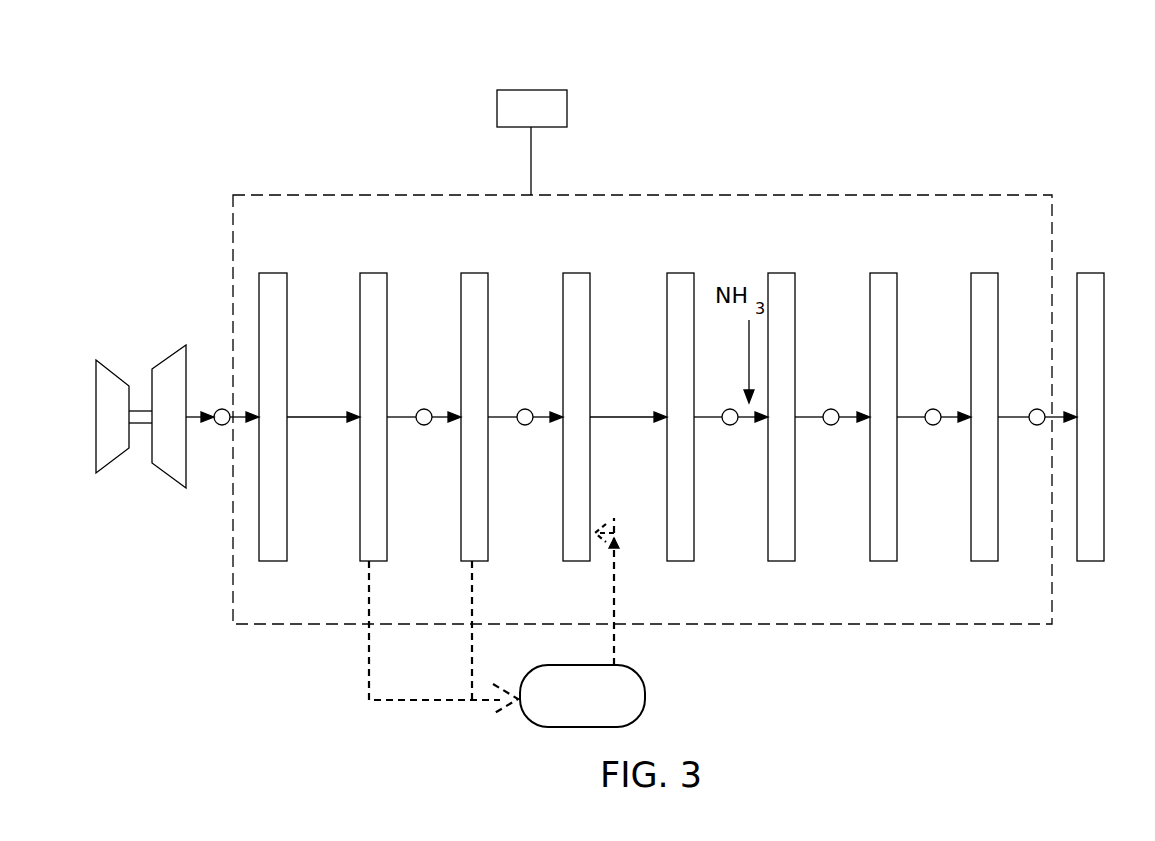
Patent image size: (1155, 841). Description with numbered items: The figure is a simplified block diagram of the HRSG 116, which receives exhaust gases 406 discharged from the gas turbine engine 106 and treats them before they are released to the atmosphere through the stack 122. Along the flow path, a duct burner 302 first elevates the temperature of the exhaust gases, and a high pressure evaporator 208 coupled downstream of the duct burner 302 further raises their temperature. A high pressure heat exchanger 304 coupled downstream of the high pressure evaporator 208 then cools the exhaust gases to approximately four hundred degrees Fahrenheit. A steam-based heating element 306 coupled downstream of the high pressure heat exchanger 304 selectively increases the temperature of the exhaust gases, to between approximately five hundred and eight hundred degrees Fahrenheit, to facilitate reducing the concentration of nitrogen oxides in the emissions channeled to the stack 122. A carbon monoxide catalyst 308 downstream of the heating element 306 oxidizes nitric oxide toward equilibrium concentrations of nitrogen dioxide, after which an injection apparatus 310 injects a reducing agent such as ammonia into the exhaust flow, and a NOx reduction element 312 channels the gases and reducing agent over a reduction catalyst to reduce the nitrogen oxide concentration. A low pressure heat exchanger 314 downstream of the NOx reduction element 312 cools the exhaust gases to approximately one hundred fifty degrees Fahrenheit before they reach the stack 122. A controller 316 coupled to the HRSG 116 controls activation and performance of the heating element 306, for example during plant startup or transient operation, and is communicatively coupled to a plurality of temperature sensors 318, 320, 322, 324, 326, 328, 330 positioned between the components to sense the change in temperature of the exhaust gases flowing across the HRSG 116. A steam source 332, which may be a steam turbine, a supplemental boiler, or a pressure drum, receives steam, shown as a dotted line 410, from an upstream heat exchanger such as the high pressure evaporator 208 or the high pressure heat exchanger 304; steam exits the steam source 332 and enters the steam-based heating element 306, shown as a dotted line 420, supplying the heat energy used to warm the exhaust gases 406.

The gas turbine engine 106 is at (168, 355).
The HRSG 116 is at (938, 195).
The stack 122 is at (1090, 273).
The high pressure evaporator 208 is at (373, 273).
The duct burner 302 is at (272, 273).
The high pressure heat exchanger 304 is at (474, 273).
The steam-based heating element 306 is at (576, 273).
The carbon monoxide catalyst 308 is at (680, 273).
The injection apparatus 310 is at (781, 273).
The NOx reduction element 312 is at (883, 273).
The low pressure heat exchanger 314 is at (984, 273).
The controller 316 is at (543, 90).
The temperature sensor 318 is at (222, 409).
The temperature sensor 320 is at (424, 409).
The temperature sensor 322 is at (525, 409).
The temperature sensor 324 is at (730, 409).
The temperature sensor 326 is at (831, 409).
The temperature sensor 328 is at (933, 409).
The temperature sensor 330 is at (1037, 409).
The steam source 332 is at (530, 724).
The exhaust gases 406 is at (188, 418).
The steam line to steam source 410 is at (369, 652).
The steam line to heating element 420 is at (614, 588).